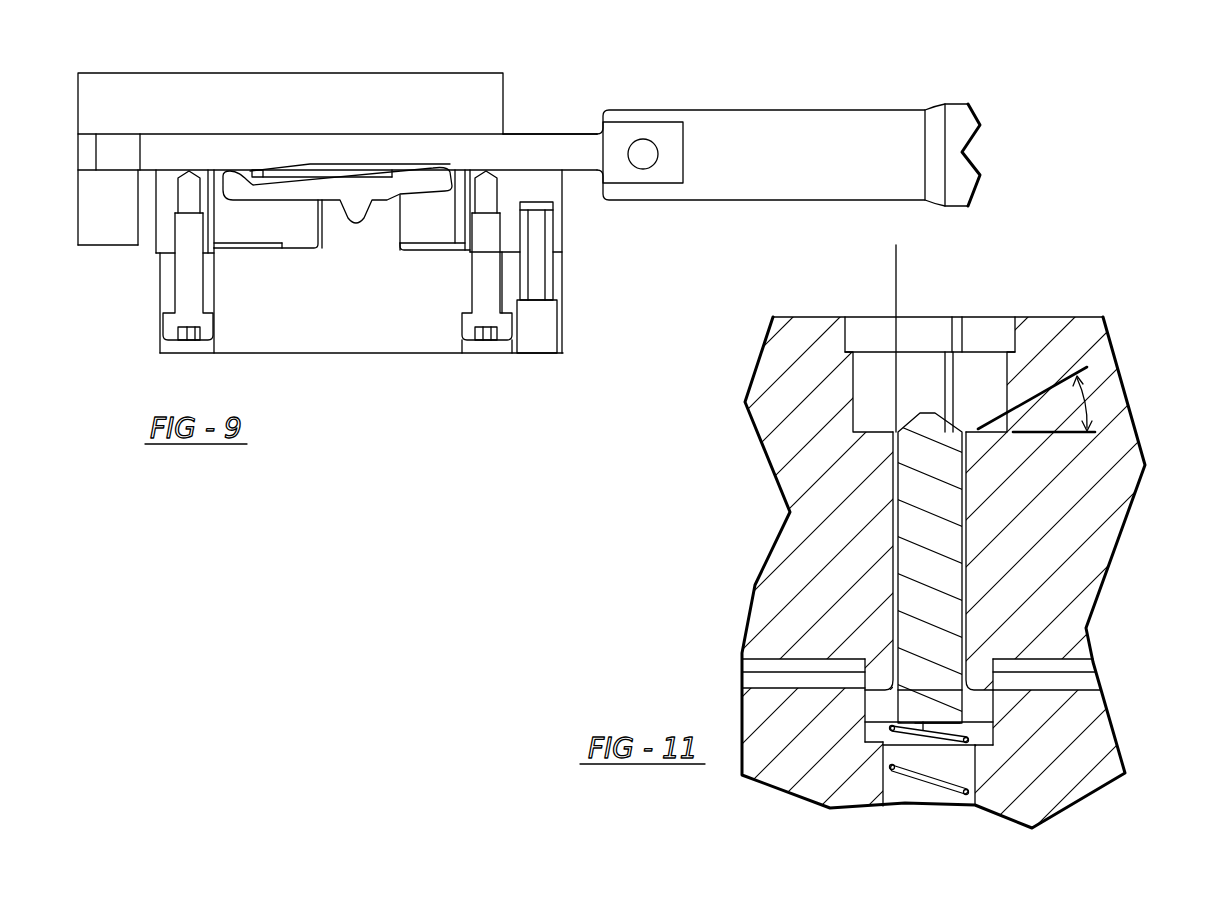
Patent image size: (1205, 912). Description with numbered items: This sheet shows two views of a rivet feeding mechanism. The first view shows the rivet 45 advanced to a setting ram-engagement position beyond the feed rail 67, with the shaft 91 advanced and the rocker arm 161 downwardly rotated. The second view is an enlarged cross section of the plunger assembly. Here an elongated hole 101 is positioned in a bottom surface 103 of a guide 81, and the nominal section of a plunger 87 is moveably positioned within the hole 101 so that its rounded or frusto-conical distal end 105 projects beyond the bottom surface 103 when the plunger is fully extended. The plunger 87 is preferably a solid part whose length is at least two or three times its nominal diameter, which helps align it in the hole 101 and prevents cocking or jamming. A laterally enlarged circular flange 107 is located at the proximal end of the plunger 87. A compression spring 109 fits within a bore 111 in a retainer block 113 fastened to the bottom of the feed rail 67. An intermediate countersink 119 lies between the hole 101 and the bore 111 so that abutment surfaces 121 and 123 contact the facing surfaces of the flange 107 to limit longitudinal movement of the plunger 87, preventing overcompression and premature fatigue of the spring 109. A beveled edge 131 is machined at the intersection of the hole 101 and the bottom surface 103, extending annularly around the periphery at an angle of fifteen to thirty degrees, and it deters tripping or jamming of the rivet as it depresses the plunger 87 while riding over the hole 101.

In FIG. 9, the rivet 45 is at (120, 148).
In FIG. 9, the shaft 91 is at (203, 152).
In FIG. 9, the feed rail 67 is at (513, 172).
In FIG. 11, the feed rail 67 is at (770, 385).
In FIG. 9, the rocker arm 161 is at (287, 190).
In FIG. 11, the beveled edge 131 is at (898, 327).
In FIG. 11, the bottom surface 103 is at (875, 432).
In FIG. 11, the distal end 105 is at (912, 430).
In FIG. 11, the guide 81 is at (1007, 375).
In FIG. 11, the elongated hole 101 is at (895, 480).
In FIG. 11, the plunger 87 is at (922, 558).
In FIG. 11, the abutment surface 121 is at (885, 685).
In FIG. 11, the flange 107 is at (979, 705).
In FIG. 11, the retainer block 113 is at (1075, 748).
In FIG. 11, the bore 111 is at (963, 762).
In FIG. 11, the intermediate countersink 119 is at (863, 730).
In FIG. 11, the abutment surface 123 is at (880, 745).
In FIG. 11, the compression spring 109 is at (927, 783).